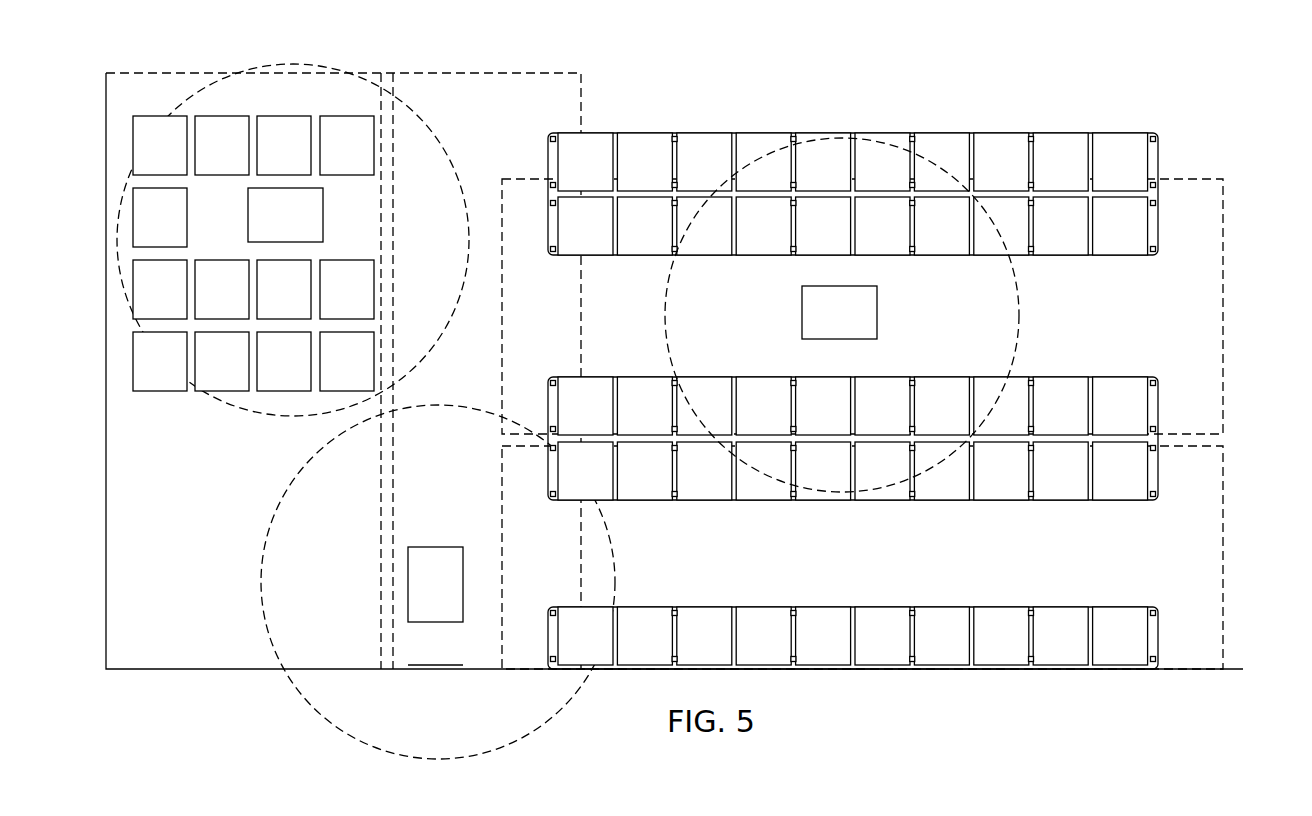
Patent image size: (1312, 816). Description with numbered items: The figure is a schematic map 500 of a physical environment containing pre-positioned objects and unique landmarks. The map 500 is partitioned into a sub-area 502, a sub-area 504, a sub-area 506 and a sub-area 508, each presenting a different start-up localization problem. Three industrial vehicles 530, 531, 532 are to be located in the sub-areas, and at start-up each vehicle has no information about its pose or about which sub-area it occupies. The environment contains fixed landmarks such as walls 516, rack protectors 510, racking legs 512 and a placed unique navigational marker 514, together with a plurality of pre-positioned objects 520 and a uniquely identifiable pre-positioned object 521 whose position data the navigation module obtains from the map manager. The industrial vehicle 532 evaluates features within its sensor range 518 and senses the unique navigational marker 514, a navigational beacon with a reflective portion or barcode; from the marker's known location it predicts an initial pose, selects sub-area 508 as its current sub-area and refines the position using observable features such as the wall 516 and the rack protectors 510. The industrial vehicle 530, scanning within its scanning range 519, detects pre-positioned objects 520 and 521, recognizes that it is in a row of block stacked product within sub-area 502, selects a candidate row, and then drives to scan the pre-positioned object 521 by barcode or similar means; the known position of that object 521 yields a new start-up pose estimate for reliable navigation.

The map 500 is at (1060, 53).
The sub-area 502 is at (395, 85).
The sub-area 504 is at (1223, 221).
The sub-area 506 is at (1223, 538).
The sub-area 508 is at (581, 97).
The rack protectors 510 is at (548, 155).
The racking legs 512 is at (913, 137).
The unique navigational marker 514 is at (433, 668).
The walls 516 is at (160, 670).
The range 518 is at (612, 543).
The scanning range 519 is at (244, 412).
The pre-positioned objects 520 is at (640, 390).
The pre-positioned object 521 is at (146, 226).
The industrial vehicle 530 is at (272, 224).
The industrial vehicle 531 is at (826, 322).
The industrial vehicle 532 is at (422, 594).